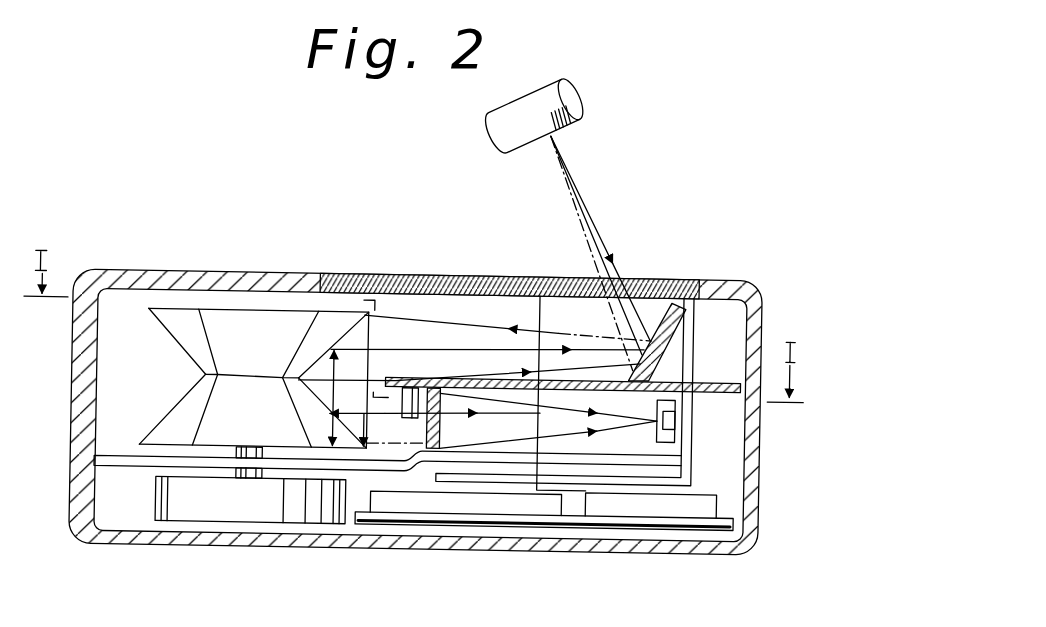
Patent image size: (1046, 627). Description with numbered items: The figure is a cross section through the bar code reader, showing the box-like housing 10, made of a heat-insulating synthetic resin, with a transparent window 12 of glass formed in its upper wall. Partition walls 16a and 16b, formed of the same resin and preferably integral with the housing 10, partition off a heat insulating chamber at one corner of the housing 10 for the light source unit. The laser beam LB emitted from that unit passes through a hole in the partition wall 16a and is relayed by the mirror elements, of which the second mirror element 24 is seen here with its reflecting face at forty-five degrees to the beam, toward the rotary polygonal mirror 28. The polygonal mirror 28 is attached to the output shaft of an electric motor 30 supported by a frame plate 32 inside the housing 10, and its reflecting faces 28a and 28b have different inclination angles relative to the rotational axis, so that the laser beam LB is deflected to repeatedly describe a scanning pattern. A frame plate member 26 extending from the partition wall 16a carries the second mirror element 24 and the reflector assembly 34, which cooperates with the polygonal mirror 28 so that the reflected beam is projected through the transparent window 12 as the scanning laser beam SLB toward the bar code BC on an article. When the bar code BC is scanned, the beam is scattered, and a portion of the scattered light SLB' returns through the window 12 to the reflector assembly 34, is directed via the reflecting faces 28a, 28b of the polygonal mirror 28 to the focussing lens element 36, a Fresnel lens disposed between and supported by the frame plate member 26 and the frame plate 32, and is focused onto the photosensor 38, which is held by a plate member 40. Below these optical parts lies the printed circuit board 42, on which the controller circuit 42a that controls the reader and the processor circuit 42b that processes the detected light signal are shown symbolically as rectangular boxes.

The housing 10 is at (146, 272).
The transparent window 12 is at (439, 273).
The partition wall 16a is at (737, 308).
The partition wall 16b is at (730, 485).
The second mirror element 24 is at (402, 419).
The frame plate member 26 is at (603, 387).
The rotary polygonal mirror 28 is at (170, 343).
The reflecting face 28a is at (160, 331).
The reflecting face 28b is at (157, 430).
The electric motor 30 is at (267, 515).
The frame plate 32 is at (117, 467).
The reflector assembly 34 is at (670, 298).
The focussing lens element 36 is at (431, 449).
The photosensor 38 is at (657, 423).
The plate member 40 is at (683, 455).
The printed circuit board 42 is at (559, 526).
The controller circuit 42a is at (487, 507).
The processor circuit 42b is at (650, 507).
The bar code BC is at (568, 120).
The scanning laser beam SLB is at (622, 246).
The scattered light SLB' is at (617, 253).
The laser beam LB is at (387, 344).